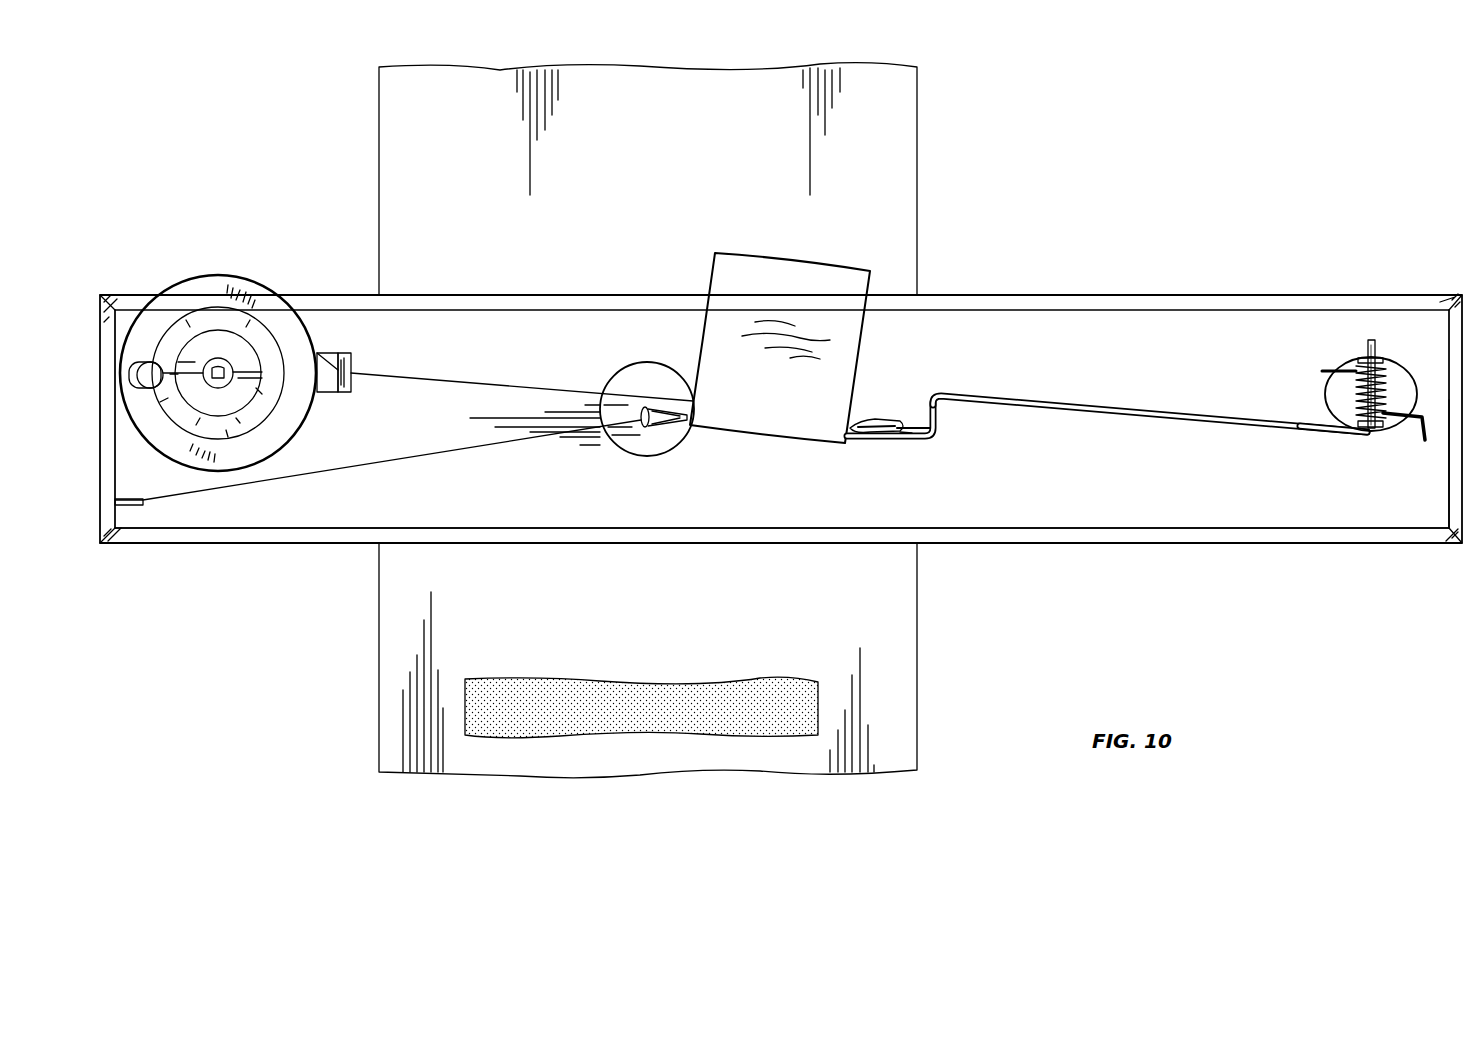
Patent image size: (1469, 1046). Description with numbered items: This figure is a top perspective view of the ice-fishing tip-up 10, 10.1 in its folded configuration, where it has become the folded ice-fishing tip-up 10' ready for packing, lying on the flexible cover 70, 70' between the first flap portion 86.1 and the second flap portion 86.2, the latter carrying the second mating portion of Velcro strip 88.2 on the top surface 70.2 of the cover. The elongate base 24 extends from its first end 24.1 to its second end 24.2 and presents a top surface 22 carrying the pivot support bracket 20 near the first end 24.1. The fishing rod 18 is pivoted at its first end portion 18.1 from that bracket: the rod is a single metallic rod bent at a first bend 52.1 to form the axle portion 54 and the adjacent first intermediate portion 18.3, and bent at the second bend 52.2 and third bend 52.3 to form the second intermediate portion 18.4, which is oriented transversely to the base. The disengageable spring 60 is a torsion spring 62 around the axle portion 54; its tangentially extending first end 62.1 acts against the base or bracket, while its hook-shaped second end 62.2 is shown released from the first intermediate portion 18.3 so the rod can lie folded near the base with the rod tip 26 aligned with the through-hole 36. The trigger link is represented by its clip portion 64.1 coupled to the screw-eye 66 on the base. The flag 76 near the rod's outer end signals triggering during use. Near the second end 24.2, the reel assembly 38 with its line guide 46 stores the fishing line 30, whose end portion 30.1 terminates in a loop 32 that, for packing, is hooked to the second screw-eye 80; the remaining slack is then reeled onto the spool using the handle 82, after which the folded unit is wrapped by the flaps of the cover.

The ice-fishing tip-up 10 is at (1186, 77).
The ice-fishing tip-up of the first aspect 10.1 is at (1197, 75).
The folded ice-fishing tip-up 10' is at (1252, 148).
The fishing rod 18 is at (1107, 419).
The first end portion of the fishing rod 18.1 is at (1352, 447).
The first intermediate portion of the fishing rod 18.3 is at (1050, 401).
The second intermediate portion of the fishing rod 18.4 is at (934, 433).
The pivot support bracket 20 is at (1343, 333).
The top surface of the elongate base 22 is at (1172, 517).
The elongate base 24 is at (784, 496).
The first end of the elongate base 24.1 is at (1403, 564).
The second end of the elongate base 24.2 is at (152, 604).
The rod tip 26 is at (651, 430).
The fishing line 30 is at (498, 385).
The end portion of the fishing line 30.1 is at (205, 551).
The loop 32 is at (145, 505).
The through-hole 36 is at (640, 365).
The reel assembly 38 is at (199, 255).
The line guide 46 is at (347, 352).
The first bend 52.1 is at (1374, 437).
The second bend 52.2 is at (940, 392).
The third bend 52.3 is at (928, 447).
The axle portion 54 is at (1362, 358).
The disengageable spring 60 is at (1395, 342).
The torsion spring 62 is at (1385, 393).
The first end of the torsion spring 62.1 is at (1323, 371).
The second end of the torsion spring 62.2 is at (1438, 440).
The clip portion of the trigger link 64.1 is at (885, 418).
The screw-eye 66 is at (913, 434).
The flexible cover 70 is at (700, 420).
The web band alternative 70' is at (700, 420).
The top surface of the flexible cover 70.2 is at (673, 187).
The flag 76 is at (810, 263).
The second screw-eye 80 is at (110, 507).
The handle 82 is at (148, 362).
The first flap portion 86.1 is at (494, 187).
The second flap portion 86.2 is at (494, 632).
The second mating portion of Velcro strip 88.2 is at (661, 719).